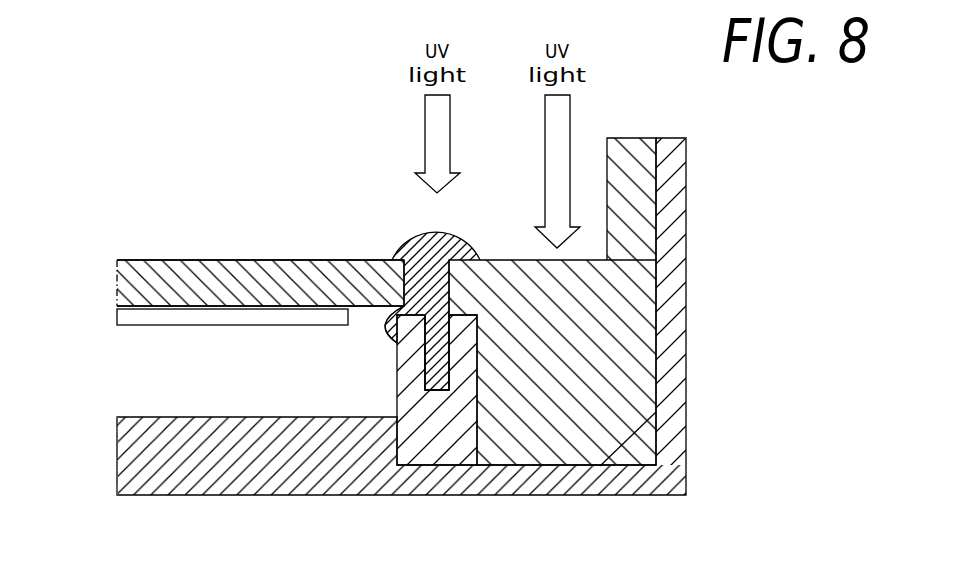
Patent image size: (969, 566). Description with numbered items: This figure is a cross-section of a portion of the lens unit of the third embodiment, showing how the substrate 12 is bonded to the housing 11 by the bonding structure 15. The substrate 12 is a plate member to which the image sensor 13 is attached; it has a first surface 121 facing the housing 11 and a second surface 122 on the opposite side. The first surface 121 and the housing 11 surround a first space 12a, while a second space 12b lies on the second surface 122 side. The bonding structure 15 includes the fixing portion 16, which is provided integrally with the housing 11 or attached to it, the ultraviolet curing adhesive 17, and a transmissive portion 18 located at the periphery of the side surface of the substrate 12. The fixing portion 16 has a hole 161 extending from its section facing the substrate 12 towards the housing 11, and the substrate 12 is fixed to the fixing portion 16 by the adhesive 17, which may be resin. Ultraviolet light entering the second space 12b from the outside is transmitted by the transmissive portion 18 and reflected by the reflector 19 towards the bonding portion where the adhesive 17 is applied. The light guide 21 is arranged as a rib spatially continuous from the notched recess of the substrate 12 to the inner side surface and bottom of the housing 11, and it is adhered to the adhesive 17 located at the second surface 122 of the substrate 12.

The housing 11 is at (672, 218).
The substrate 12 is at (237, 290).
The first space 12a is at (190, 358).
The second space 12b is at (333, 157).
The first surface 121 is at (283, 308).
The second surface 122 is at (273, 260).
The image sensor 13 is at (232, 325).
The bonding structure 15 is at (460, 236).
The fixing portion 16 is at (442, 445).
The hole 161 is at (435, 368).
The adhesive 17 is at (412, 238).
The transmissive portion 18 is at (630, 163).
The reflector 19 is at (621, 447).
The light guide 21 is at (545, 375).